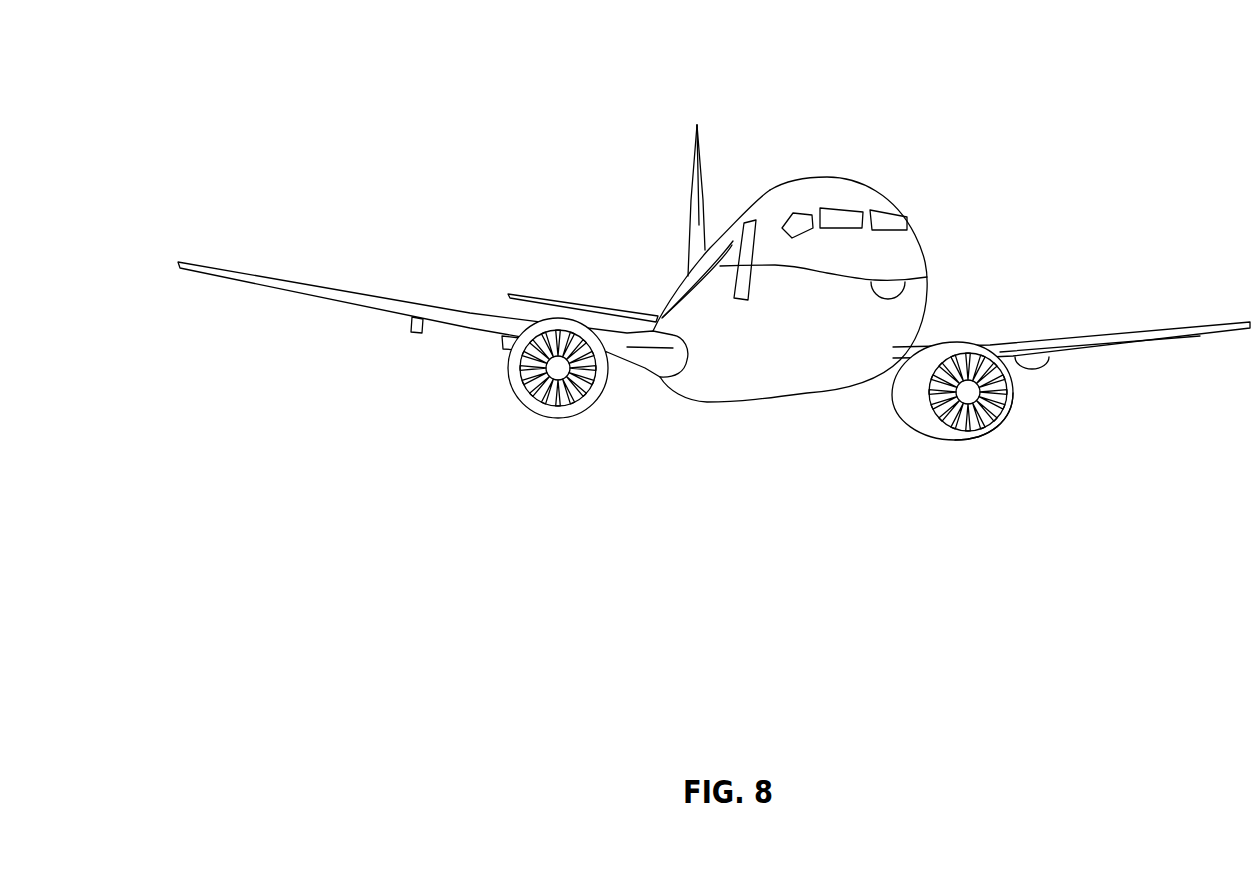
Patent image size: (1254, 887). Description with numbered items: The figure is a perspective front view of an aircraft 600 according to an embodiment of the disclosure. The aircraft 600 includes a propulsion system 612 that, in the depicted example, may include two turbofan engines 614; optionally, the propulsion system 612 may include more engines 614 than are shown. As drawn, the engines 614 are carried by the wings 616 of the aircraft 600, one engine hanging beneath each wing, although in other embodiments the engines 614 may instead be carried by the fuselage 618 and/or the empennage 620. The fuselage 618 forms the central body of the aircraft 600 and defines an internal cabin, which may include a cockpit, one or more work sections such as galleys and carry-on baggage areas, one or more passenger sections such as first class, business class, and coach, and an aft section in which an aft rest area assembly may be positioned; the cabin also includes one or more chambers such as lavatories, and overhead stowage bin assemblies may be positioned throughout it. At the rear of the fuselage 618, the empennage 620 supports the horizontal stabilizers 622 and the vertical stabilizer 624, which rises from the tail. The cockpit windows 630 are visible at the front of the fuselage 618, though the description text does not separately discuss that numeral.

The aircraft 600 is at (450, 70).
The propulsion system 612 is at (1062, 433).
The turbofan engines 614 is at (553, 419).
The wings 616 is at (322, 288).
The fuselage 618 is at (928, 243).
The empennage 620 is at (683, 278).
The horizontal stabilizers 622 is at (548, 297).
The vertical stabilizer 624 is at (690, 168).
The cockpit windows 630 is at (847, 213).